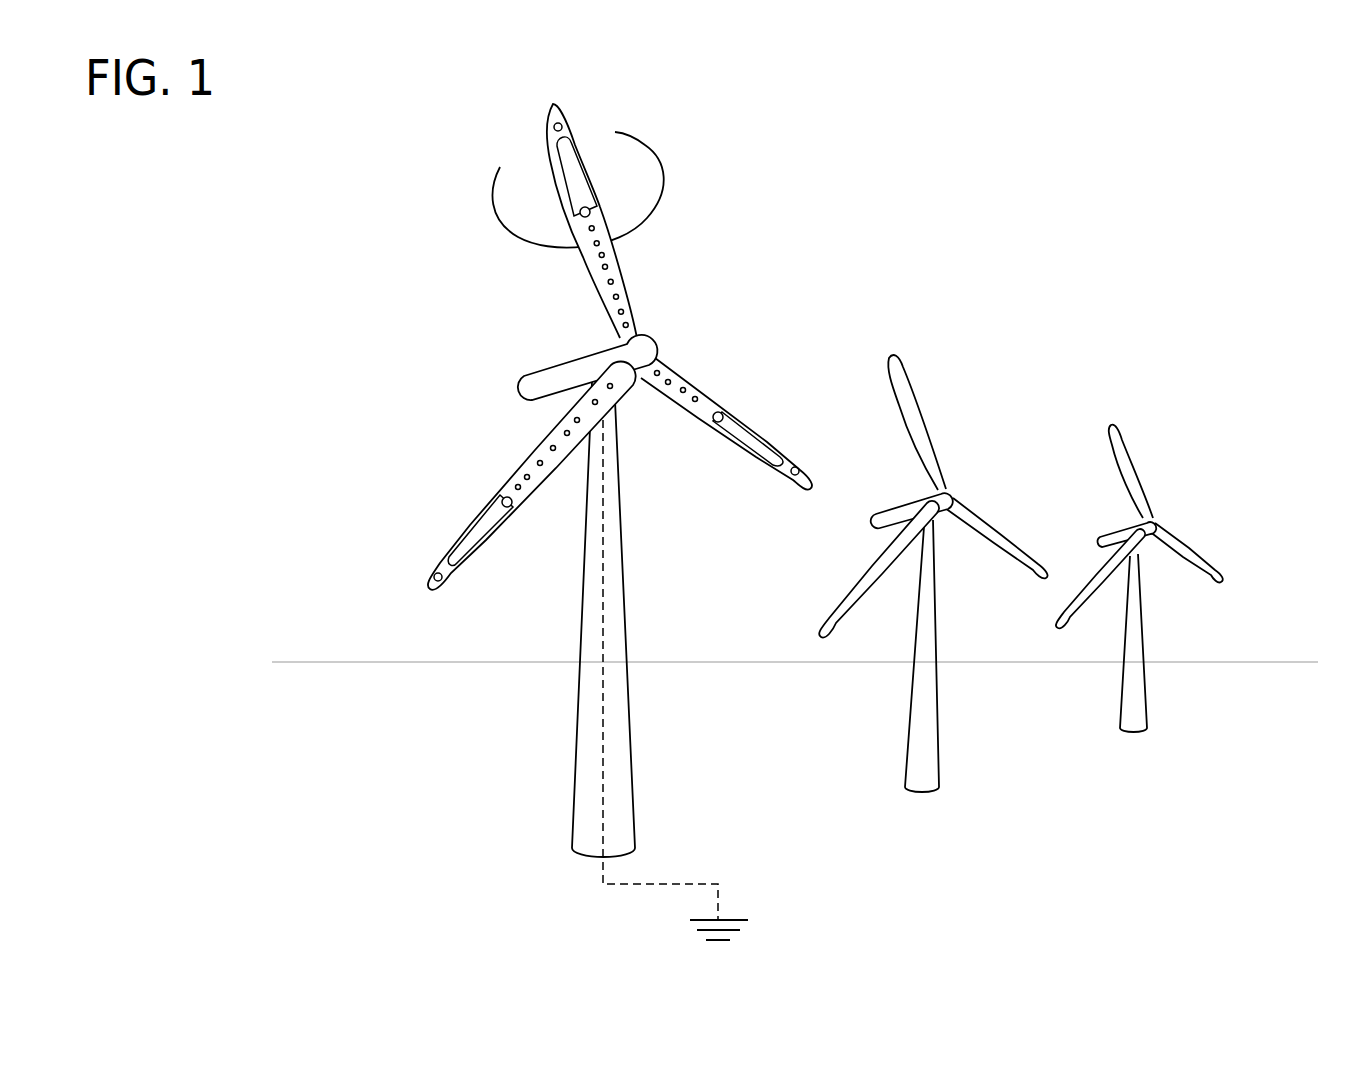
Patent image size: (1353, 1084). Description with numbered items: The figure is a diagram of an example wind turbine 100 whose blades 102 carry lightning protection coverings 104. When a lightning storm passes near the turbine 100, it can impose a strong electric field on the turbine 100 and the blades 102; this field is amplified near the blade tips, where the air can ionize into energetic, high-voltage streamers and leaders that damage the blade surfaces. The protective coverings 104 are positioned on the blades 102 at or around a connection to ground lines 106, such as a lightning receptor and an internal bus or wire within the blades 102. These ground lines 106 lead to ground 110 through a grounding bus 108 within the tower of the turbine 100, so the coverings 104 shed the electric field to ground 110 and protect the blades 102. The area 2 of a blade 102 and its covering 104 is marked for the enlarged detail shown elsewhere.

The area 2 is at (571, 162).
The wind turbine 100 is at (879, 257).
The blades 102 is at (533, 293).
The lightning protection coverings 104 is at (622, 164).
The ground lines 106 is at (611, 282).
The grounding bus 108 is at (618, 727).
The ground 110 is at (775, 903).